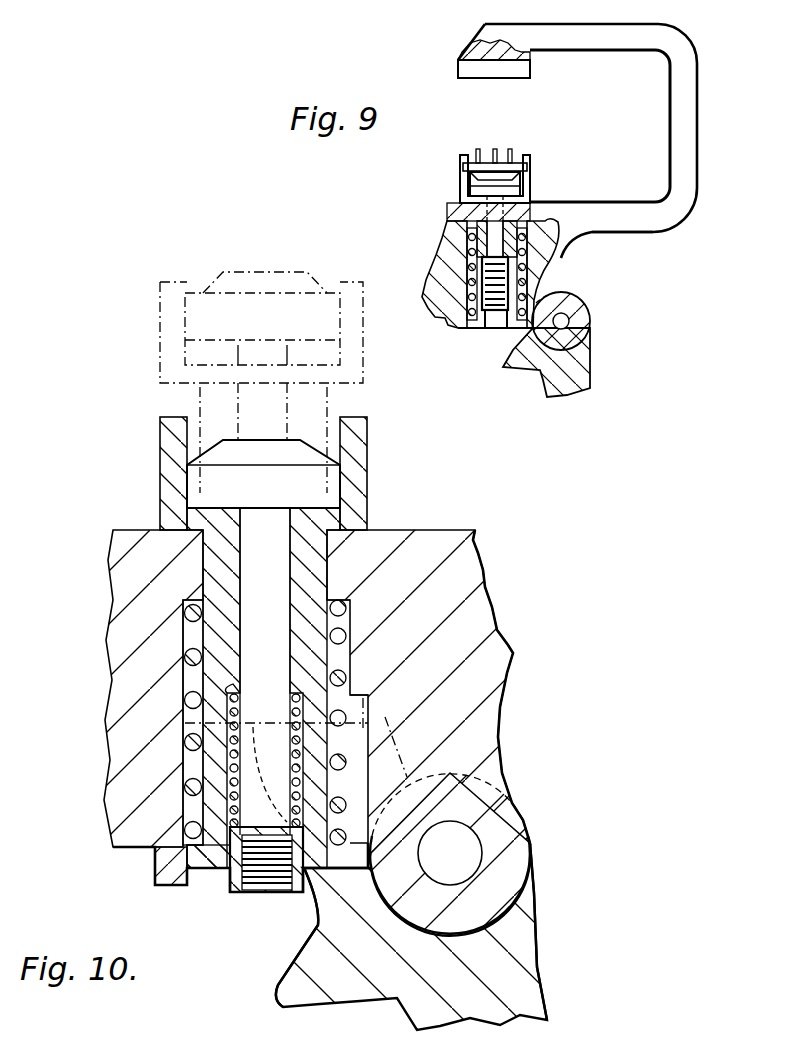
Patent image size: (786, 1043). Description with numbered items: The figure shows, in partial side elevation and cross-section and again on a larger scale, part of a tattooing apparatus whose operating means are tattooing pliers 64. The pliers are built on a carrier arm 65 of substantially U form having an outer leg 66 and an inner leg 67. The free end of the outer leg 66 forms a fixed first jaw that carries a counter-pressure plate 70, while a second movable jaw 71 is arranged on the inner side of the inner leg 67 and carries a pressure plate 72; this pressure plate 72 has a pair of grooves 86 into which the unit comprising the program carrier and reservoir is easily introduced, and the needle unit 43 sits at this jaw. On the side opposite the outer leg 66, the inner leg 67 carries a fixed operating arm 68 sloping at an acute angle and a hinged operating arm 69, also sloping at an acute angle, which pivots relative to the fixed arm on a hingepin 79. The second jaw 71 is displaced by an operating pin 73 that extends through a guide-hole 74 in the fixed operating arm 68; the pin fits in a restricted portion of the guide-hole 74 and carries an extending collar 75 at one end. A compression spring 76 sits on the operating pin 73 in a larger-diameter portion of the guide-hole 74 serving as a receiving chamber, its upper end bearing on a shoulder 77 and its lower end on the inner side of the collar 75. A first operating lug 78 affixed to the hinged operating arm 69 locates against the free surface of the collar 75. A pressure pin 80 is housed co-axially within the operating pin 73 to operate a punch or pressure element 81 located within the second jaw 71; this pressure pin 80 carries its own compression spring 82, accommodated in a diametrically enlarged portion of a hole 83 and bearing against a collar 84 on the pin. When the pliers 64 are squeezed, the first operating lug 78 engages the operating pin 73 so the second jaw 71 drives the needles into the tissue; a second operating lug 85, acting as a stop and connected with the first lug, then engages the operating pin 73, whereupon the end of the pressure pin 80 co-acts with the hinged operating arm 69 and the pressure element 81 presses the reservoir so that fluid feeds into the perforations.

In FIG. 9, the pins 43 is at (476, 157).
In FIG. 9, the tattooing pliers 64 is at (567, 258).
In FIG. 10, the tattooing pliers 64 is at (505, 735).
In FIG. 9, the carrier arm 65 is at (670, 125).
In FIG. 9, the outer leg 66 is at (470, 48).
In FIG. 9, the inner leg 67 is at (619, 236).
In FIG. 9, the fixed operating arm 68 is at (452, 253).
In FIG. 10, the fixed operating arm 68 is at (115, 848).
In FIG. 9, the hinged operating arm 69 is at (585, 375).
In FIG. 10, the hinged operating arm 69 is at (527, 1010).
In FIG. 9, the counter-pressure plate 70 is at (458, 70).
In FIG. 9, the second movable jaw 71 is at (470, 202).
In FIG. 10, the second movable jaw 71 is at (172, 513).
In FIG. 9, the pressure plate 72 is at (460, 178).
In FIG. 10, the pressure plate 72 is at (170, 445).
In FIG. 9, the operating pin 73 is at (530, 258).
In FIG. 10, the operating pin 73 is at (218, 562).
In FIG. 10, the guide-hole 74 is at (328, 548).
In FIG. 10, the collar 75 is at (187, 868).
In FIG. 10, the compression spring 76 is at (338, 678).
In FIG. 10, the shoulder 77 is at (338, 600).
In FIG. 10, the first operating lug 78 is at (313, 862).
In FIG. 10, the hingepin 79 is at (450, 856).
In FIG. 9, the pressure pin 80 is at (447, 212).
In FIG. 10, the pressure pin 80 is at (290, 530).
In FIG. 9, the pressure element 81 is at (520, 190).
In FIG. 10, the pressure element 81 is at (210, 478).
In FIG. 10, the compression spring 82 is at (229, 835).
In FIG. 10, the hole 83 is at (216, 850).
In FIG. 10, the collar 84 is at (192, 713).
In FIG. 10, the second operating lug 85 is at (277, 984).
In FIG. 9, the grooves 86 is at (530, 170).